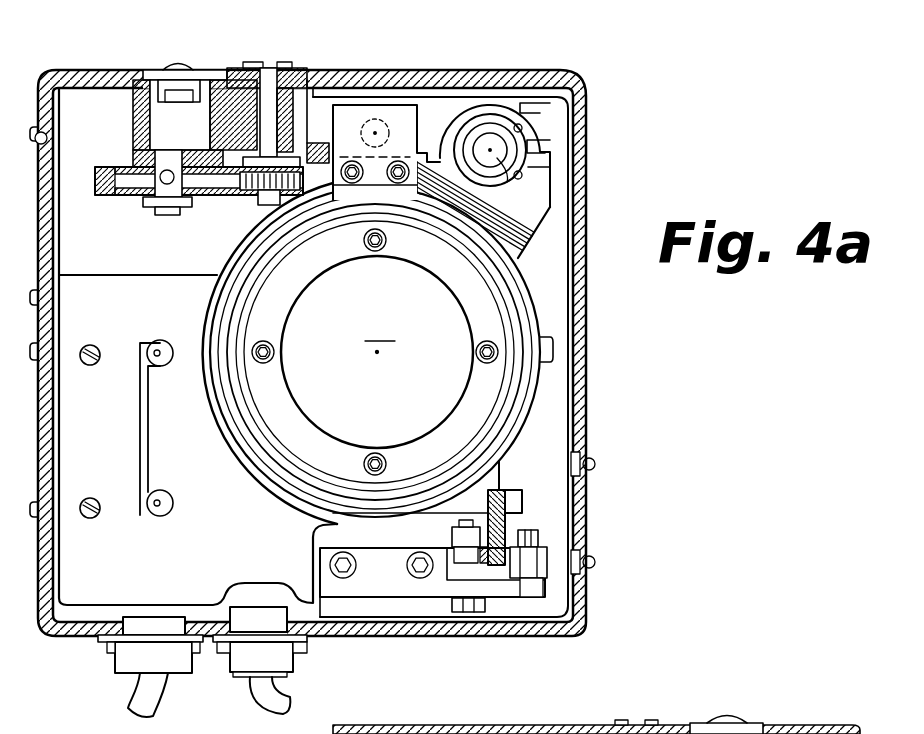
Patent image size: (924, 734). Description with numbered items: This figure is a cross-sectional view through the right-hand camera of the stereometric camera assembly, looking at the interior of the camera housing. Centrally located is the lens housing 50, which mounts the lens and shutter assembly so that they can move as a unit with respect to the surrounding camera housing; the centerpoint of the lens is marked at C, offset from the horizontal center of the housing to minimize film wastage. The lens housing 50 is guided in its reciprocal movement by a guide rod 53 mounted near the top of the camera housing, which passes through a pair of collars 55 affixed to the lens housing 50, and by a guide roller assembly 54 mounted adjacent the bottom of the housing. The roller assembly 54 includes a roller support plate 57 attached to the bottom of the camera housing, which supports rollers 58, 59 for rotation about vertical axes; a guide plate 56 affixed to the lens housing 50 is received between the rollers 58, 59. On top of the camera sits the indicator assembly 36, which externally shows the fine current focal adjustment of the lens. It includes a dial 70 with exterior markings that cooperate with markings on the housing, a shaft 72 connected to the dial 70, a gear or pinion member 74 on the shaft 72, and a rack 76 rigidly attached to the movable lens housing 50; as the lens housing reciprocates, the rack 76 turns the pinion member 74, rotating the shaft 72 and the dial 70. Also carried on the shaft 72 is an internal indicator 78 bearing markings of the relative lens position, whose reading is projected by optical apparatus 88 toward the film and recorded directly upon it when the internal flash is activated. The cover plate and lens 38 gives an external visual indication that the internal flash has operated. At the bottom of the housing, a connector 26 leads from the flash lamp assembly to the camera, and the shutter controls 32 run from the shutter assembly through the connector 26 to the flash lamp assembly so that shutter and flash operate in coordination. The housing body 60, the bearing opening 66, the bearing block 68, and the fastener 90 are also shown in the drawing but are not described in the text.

The connector 26 is at (158, 700).
The shutter controls 32 is at (286, 688).
The indicator assembly 36 is at (284, 47).
The cover plate and lens 38 is at (178, 69).
The lens housing 50 is at (527, 323).
The guide rod 53 is at (506, 184).
The guide roller assembly 54 is at (525, 578).
The collars 55 is at (522, 130).
The guide plate 56 is at (525, 489).
The roller support plate 57 is at (497, 590).
The roller 58 is at (447, 552).
The roller 59 is at (557, 531).
The housing 60 is at (590, 503).
The bearing opening 66 is at (390, 128).
The bearing block 68 is at (357, 115).
The dial 70 is at (231, 67).
The shaft 72 is at (267, 133).
The gear member 74 is at (247, 192).
The rack 76 is at (312, 149).
The internal indicator 78 is at (282, 205).
The optical apparatus 88 is at (132, 137).
The fastener 90 is at (37, 136).